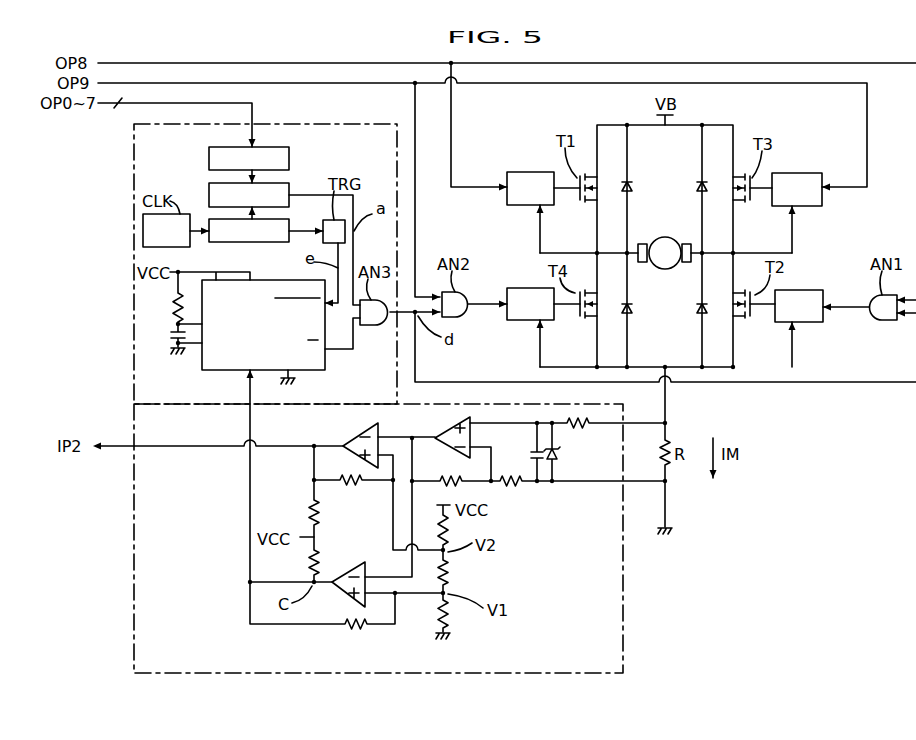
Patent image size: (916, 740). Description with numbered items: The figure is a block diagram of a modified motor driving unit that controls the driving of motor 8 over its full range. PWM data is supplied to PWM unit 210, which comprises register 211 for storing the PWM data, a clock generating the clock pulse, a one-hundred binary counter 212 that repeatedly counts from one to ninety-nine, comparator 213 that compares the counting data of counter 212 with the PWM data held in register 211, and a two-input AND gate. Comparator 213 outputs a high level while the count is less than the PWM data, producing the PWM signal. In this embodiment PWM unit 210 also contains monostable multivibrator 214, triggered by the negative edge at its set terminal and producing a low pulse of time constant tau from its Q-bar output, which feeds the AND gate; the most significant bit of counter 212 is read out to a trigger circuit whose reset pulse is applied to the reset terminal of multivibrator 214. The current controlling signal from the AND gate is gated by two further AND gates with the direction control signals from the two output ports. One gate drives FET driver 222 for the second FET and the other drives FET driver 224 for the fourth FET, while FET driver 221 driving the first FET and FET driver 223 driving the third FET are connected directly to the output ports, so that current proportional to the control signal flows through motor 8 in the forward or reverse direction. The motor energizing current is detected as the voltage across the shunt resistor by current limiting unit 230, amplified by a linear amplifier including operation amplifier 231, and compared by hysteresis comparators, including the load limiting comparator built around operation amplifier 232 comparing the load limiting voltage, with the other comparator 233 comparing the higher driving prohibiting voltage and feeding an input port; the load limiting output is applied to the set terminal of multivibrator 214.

The motor 8 is at (655, 237).
The PWM unit 210 is at (342, 125).
The register 211 is at (290, 162).
The 100 binary counter 212 is at (247, 242).
The comparator 213 is at (209, 194).
The monostable multivibrator 214 is at (220, 372).
The FET driver 221 is at (537, 172).
The FET driver 222 is at (808, 322).
The FET driver 223 is at (812, 173).
The FET driver 224 is at (512, 320).
The current limiting unit 230 is at (624, 641).
The operation amplifier 231 is at (458, 452).
The operation amplifier 232 is at (346, 570).
The comparator 233 is at (355, 438).